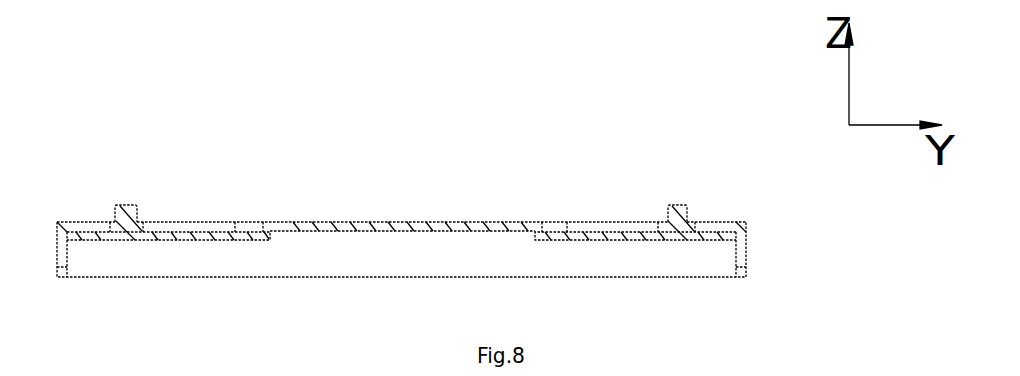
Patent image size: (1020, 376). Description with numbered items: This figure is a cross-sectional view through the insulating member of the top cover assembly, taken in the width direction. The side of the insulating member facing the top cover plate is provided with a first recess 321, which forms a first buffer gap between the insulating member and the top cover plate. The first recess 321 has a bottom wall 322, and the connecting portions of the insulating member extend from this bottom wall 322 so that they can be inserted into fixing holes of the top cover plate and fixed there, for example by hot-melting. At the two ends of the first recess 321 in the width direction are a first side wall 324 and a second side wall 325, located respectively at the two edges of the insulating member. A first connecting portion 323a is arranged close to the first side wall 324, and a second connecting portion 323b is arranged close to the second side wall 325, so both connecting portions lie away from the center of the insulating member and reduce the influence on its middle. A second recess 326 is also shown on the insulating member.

The first recess 321 is at (213, 222).
The bottom wall 322 is at (598, 222).
The first connecting portion 323a is at (680, 207).
The second connecting portion 323b is at (120, 203).
The first side wall 324 is at (730, 222).
The second side wall 325 is at (72, 222).
The second recess 326 is at (373, 240).